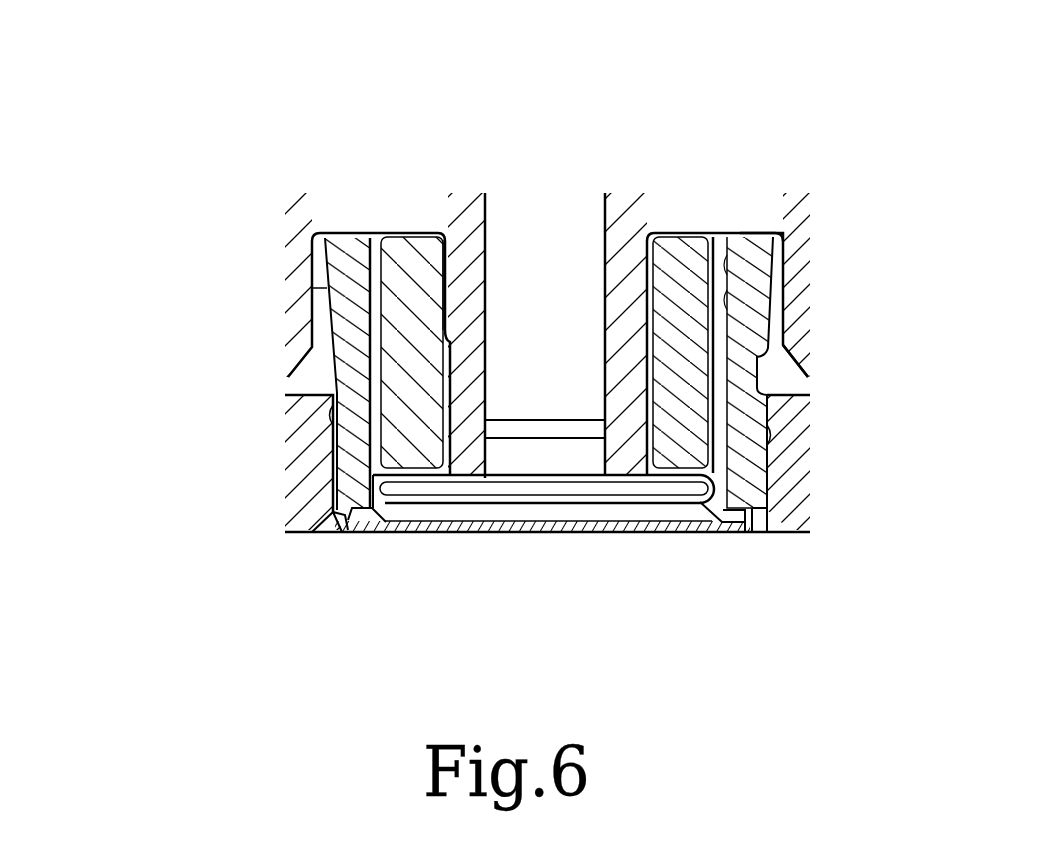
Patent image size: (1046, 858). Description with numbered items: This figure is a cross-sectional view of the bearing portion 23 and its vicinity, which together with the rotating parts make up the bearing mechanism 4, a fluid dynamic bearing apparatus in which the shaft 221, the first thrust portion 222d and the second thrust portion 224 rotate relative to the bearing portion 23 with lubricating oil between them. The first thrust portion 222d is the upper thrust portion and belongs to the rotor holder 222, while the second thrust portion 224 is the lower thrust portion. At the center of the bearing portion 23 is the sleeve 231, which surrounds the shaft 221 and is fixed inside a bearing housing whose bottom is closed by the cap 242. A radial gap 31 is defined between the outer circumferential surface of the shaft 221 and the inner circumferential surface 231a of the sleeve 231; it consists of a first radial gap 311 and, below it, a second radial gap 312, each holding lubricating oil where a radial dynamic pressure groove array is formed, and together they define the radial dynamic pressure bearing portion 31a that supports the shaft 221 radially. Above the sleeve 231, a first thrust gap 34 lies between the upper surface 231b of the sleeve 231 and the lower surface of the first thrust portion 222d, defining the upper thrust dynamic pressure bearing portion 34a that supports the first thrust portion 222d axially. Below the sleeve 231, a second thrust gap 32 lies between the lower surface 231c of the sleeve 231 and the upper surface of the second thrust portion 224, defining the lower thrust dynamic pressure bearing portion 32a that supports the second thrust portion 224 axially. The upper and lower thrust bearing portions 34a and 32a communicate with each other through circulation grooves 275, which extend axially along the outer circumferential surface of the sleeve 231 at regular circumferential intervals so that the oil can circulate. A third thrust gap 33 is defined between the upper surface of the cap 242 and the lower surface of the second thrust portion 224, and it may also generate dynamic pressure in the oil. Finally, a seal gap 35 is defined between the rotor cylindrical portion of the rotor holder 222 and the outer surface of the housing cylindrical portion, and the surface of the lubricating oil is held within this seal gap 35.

The bearing mechanism 4 is at (273, 102).
The bearing portion 23 is at (634, 329).
The rotor holder 222 is at (594, 339).
The shaft 221 is at (472, 283).
The first thrust portion 222d is at (773, 224).
The second thrust portion 224 is at (500, 495).
The sleeve 231 is at (667, 247).
The inner circumferential surface 231a is at (642, 323).
The upper surface 231b is at (683, 232).
The lower surface 231c is at (413, 475).
The cap 242 is at (593, 535).
The circulation grooves 275 is at (326, 243).
The radial gap 31 is at (269, 297).
The first radial gap 311 is at (436, 276).
The second radial gap 312 is at (438, 391).
The radial dynamic pressure bearing portion 31a is at (440, 405).
The second thrust gap 32 is at (677, 495).
The lower thrust dynamic pressure bearing portion 32a is at (730, 532).
The third thrust gap 33 is at (630, 518).
The first thrust gap 34 is at (392, 228).
The upper thrust dynamic pressure bearing portion 34a is at (415, 228).
The seal gap 35 is at (312, 274).